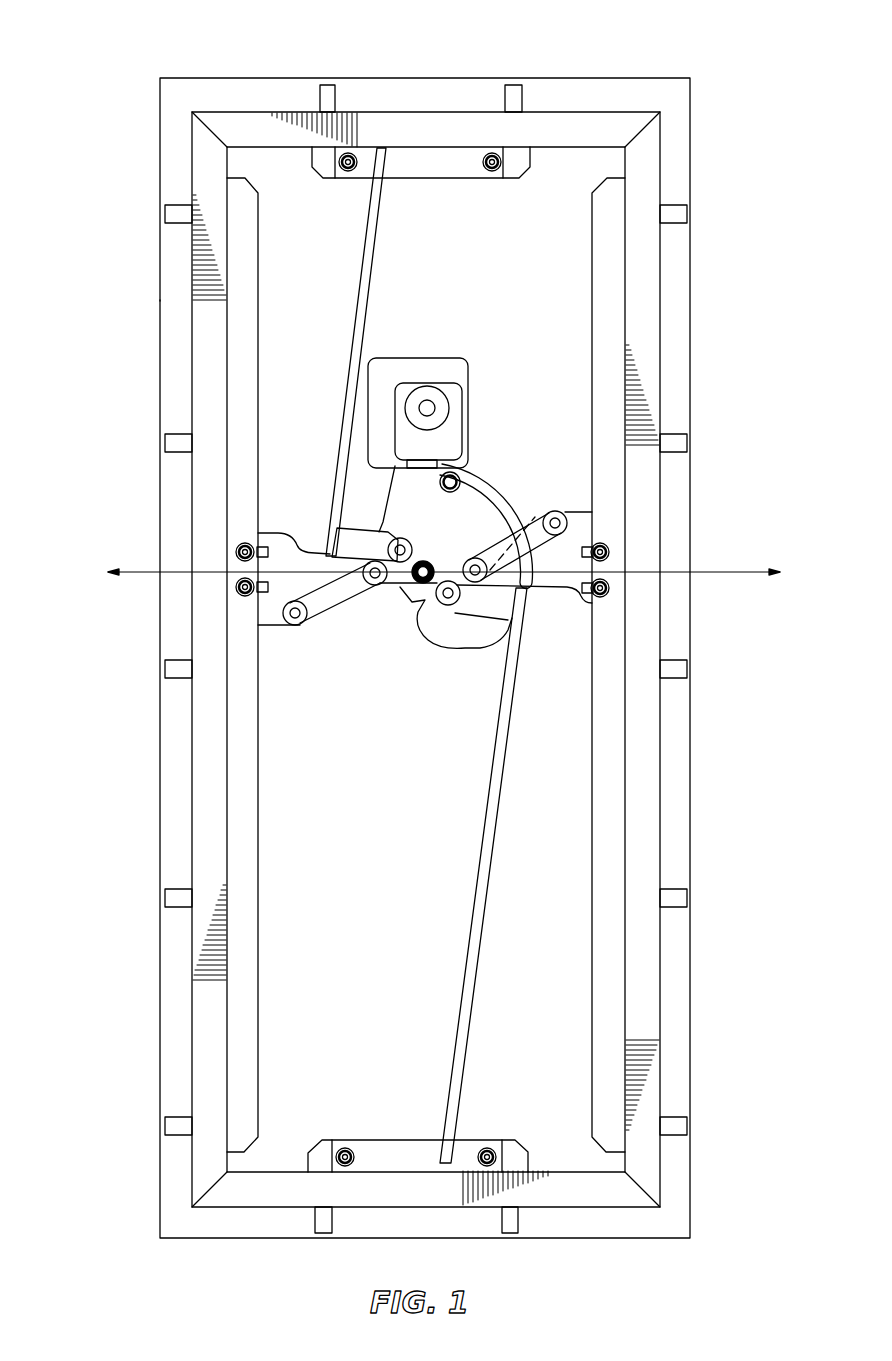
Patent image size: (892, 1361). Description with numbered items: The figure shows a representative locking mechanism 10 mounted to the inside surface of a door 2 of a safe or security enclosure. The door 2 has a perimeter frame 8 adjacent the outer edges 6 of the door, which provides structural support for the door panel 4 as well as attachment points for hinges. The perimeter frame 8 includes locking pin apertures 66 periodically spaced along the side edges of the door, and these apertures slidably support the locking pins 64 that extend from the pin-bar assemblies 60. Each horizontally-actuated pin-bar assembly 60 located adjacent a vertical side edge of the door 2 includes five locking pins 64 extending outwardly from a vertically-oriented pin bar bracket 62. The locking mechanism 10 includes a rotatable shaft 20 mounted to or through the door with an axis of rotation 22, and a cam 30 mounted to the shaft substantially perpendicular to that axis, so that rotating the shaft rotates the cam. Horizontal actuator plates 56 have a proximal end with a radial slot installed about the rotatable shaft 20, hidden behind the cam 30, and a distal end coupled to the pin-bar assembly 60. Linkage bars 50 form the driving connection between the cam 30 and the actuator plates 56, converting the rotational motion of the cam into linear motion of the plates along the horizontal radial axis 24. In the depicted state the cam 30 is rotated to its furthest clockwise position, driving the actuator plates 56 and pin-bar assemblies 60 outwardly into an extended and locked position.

The door 2 is at (717, 64).
The door panel 4 is at (384, 969).
The outer edges 6 is at (170, 315).
The perimeter frame 8 is at (650, 305).
The locking mechanism 10 is at (509, 600).
The rotatable shaft 20 is at (432, 562).
The axis of rotation 22 is at (415, 582).
The horizontal radial axis 24 is at (735, 570).
The cam 30 is at (462, 630).
The linkage bars 50 is at (533, 530).
The horizontal actuator plates 56 is at (297, 550).
The pin-bar assemblies 60 is at (445, 180).
The pin bar bracket 62 is at (612, 1040).
The locking pins 64 is at (325, 97).
The locking pin apertures 66 is at (672, 908).